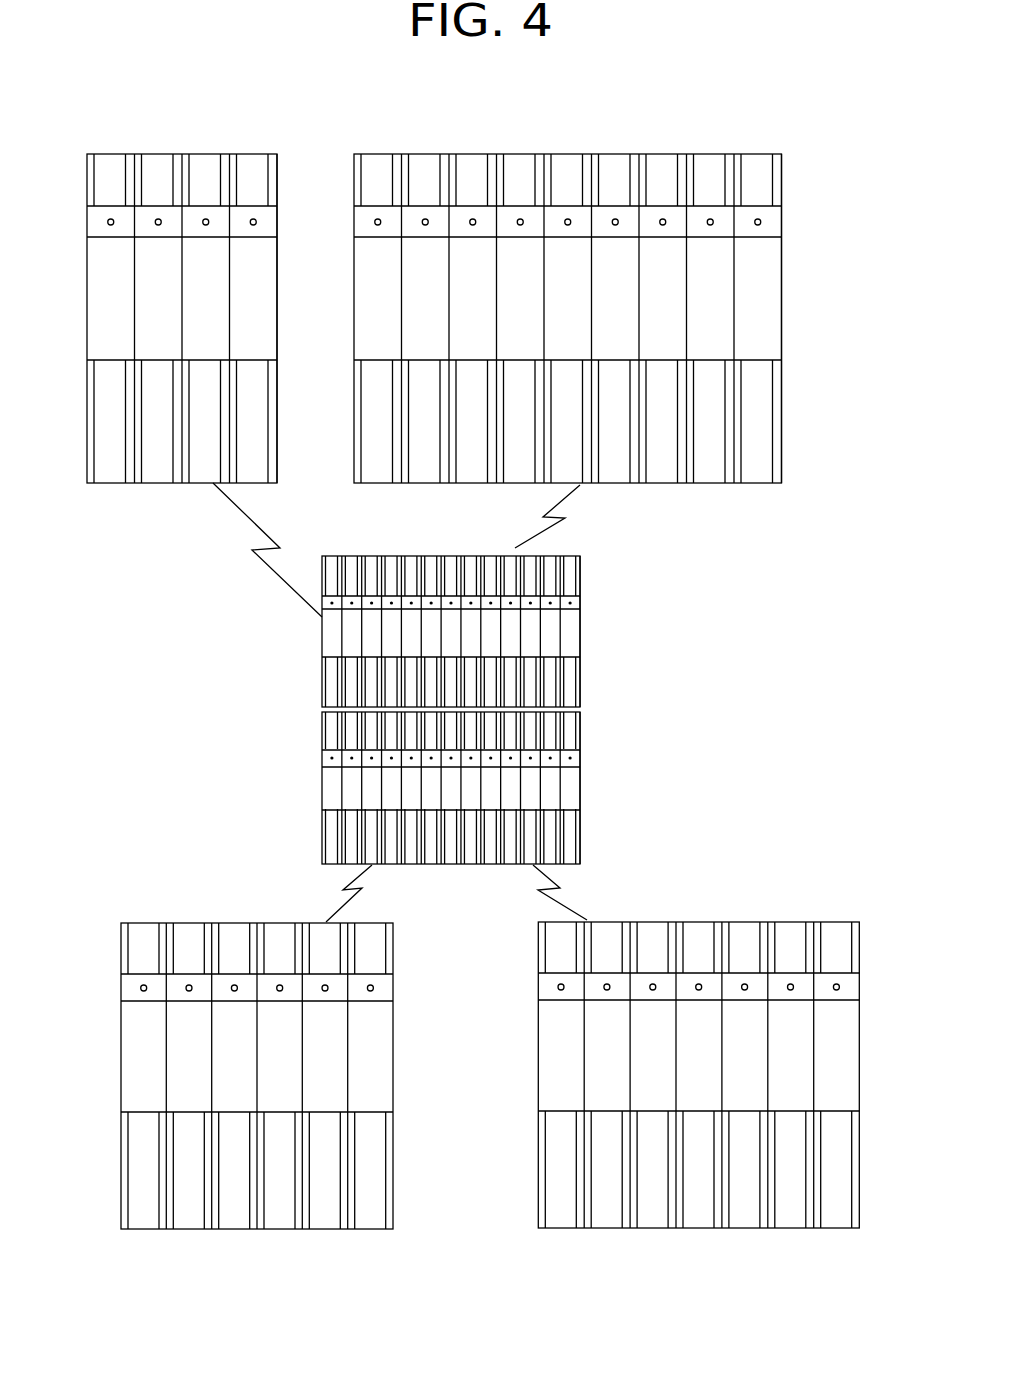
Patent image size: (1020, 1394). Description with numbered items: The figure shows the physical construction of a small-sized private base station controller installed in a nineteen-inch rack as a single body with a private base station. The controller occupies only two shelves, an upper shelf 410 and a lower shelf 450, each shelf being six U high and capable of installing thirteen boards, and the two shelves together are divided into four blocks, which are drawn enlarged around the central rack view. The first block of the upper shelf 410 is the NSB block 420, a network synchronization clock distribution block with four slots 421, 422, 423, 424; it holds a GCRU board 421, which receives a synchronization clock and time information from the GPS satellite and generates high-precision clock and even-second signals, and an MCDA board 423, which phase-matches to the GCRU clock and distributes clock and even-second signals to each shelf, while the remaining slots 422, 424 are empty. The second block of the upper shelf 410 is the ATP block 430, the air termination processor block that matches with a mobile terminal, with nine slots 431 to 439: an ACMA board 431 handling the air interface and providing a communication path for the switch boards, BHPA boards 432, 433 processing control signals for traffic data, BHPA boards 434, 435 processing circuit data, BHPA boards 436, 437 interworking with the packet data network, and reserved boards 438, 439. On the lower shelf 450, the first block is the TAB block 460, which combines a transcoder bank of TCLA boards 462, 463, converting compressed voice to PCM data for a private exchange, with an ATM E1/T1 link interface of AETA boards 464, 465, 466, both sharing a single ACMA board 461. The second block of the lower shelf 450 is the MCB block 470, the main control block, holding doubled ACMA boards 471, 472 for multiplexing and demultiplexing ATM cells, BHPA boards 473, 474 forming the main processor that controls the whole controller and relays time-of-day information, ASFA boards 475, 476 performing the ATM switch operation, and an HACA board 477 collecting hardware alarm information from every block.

The upper shelf 410 is at (592, 562).
The NSB block 420 is at (263, 108).
The GCRU board 421 is at (110, 160).
The slot 422 is at (158, 160).
The MCDA board 423 is at (208, 160).
The slot 424 is at (258, 160).
The ATP block 430 is at (782, 108).
The ACMA board 431 is at (382, 160).
The BHPA board 432 is at (430, 160).
The BHPA board 433 is at (473, 160).
The BHPA board 434 is at (522, 160).
The BHPA board 435 is at (573, 160).
The BHPA board 436 is at (622, 160).
The BHPA board 437 is at (665, 160).
The BHPA board 438 is at (713, 160).
The BHPA board 439 is at (763, 160).
The lower shelf 450 is at (592, 720).
The TAB block 460 is at (393, 1280).
The ACMA board 461 is at (143, 1224).
The TCLA board 462 is at (190, 1224).
The TCLA board 463 is at (238, 1224).
The AETA board 464 is at (283, 1224).
The AETA board 465 is at (330, 1224).
The AETA board 466 is at (377, 1224).
The MCB block 470 is at (860, 1280).
The ACMA board 471 is at (563, 1224).
The ACMA board 472 is at (610, 1224).
The BHPA board 473 is at (657, 1224).
The BHPA board 474 is at (703, 1224).
The ASFA board 475 is at (750, 1224).
The ASFA board 476 is at (797, 1224).
The HACA board 477 is at (847, 1224).